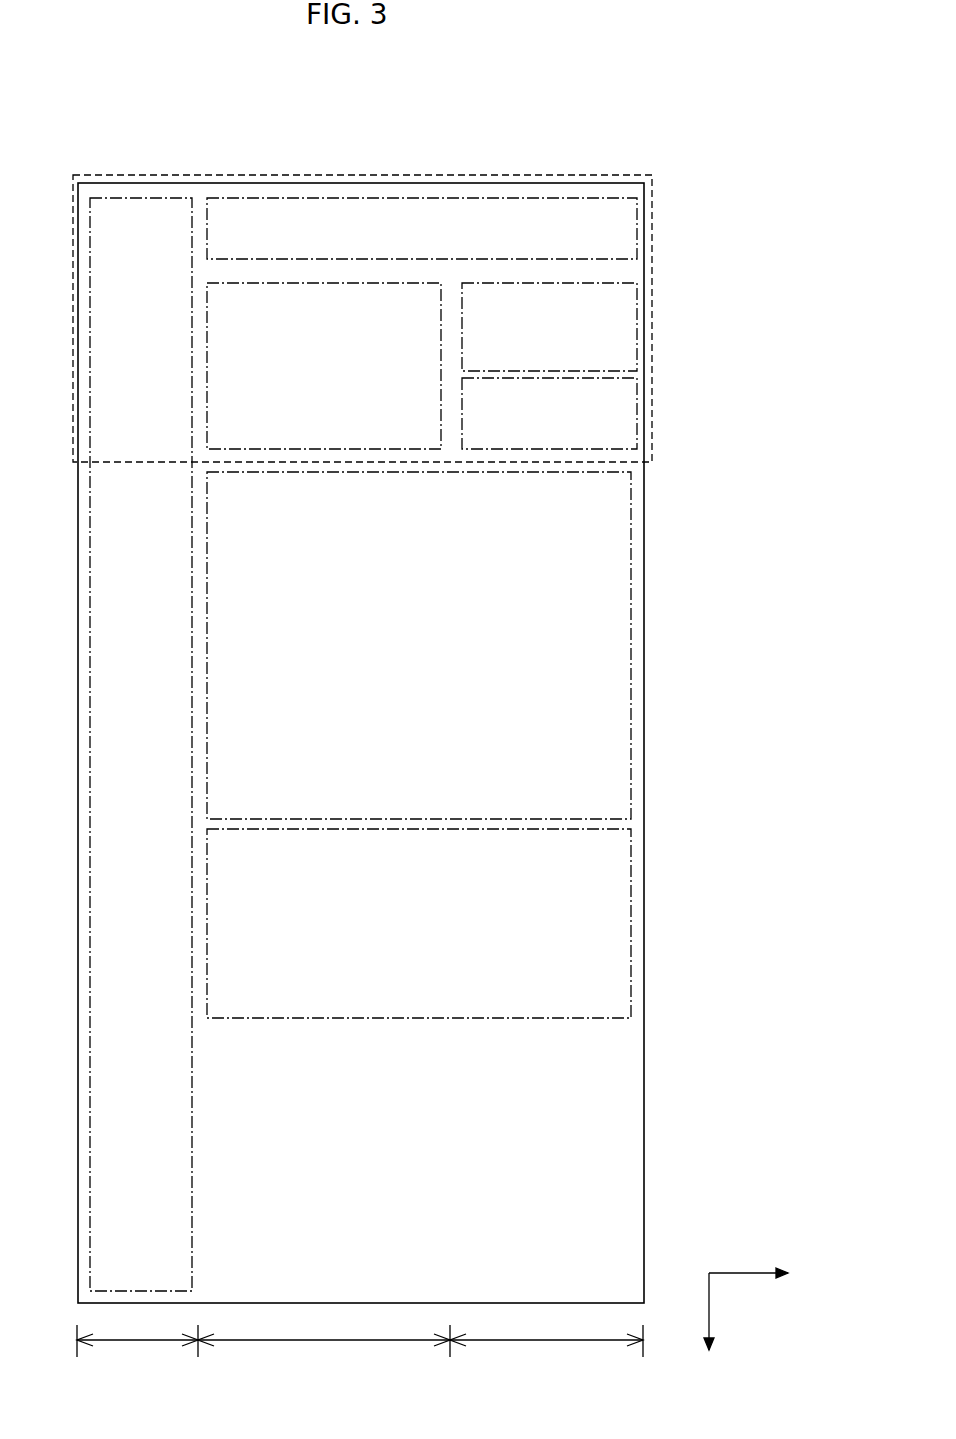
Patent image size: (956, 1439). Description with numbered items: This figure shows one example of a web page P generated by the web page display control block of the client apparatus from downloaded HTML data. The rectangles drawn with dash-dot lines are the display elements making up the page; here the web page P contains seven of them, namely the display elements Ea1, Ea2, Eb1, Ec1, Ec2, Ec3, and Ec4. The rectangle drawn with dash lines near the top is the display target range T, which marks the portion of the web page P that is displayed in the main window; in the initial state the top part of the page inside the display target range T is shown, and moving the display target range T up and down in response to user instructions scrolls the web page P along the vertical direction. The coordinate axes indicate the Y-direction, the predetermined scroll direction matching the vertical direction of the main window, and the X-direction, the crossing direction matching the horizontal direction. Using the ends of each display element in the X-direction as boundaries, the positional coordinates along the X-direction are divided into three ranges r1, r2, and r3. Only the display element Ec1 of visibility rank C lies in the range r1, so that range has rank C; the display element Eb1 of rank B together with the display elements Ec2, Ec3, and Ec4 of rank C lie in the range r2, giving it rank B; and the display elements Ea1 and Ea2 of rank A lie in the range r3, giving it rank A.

The web page P is at (596, 183).
The display target range T is at (653, 225).
The display element Ec1 is at (141, 744).
The display element Ec2 is at (422, 228).
The display element Ec3 is at (324, 366).
The display element Ec4 is at (419, 645).
The display element Ea1 is at (549, 327).
The display element Ea2 is at (549, 413).
The display element Eb1 is at (419, 923).
The range r1 is at (137, 1352).
The range r2 is at (324, 1352).
The range r3 is at (546, 1351).
The X-direction X is at (760, 1274).
The Y-direction Y is at (708, 1325).